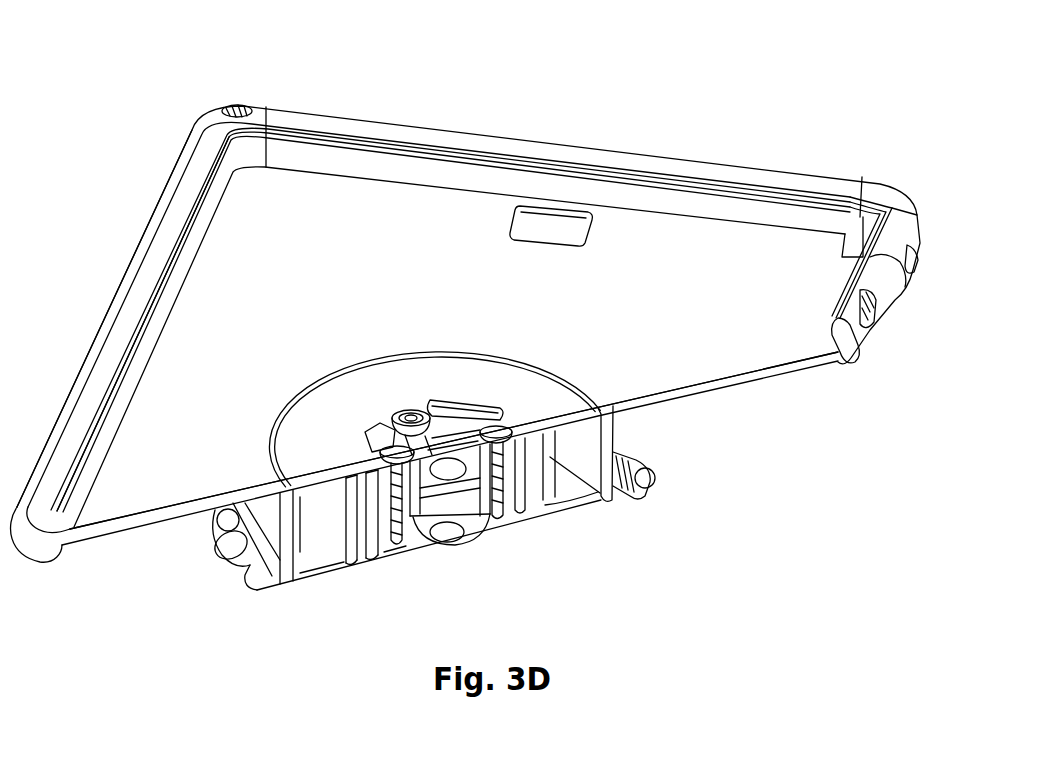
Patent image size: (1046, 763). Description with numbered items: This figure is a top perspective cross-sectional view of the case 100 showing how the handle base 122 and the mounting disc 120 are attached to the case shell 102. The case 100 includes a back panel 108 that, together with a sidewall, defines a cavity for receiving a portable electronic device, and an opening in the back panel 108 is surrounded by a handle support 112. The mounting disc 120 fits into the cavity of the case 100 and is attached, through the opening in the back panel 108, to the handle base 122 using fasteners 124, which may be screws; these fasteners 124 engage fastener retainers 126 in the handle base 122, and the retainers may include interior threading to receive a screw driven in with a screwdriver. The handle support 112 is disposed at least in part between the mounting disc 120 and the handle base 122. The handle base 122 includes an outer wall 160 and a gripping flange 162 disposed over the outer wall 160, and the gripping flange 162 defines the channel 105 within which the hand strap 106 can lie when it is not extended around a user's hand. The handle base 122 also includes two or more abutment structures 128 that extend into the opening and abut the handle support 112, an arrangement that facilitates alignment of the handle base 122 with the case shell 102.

The case 100 is at (125, 90).
The case shell 102 is at (771, 369).
The channel 105 is at (480, 538).
The hand strap 106 is at (449, 540).
The back panel 108 is at (221, 296).
The handle support 112 is at (580, 426).
The mounting disc 120 is at (466, 379).
The handle base 122 is at (281, 575).
The fasteners 124 is at (398, 543).
The fastener retainers 126 is at (384, 543).
The abutment structures 128 is at (356, 541).
The outer wall 160 is at (612, 468).
The gripping flange 162 is at (650, 485).